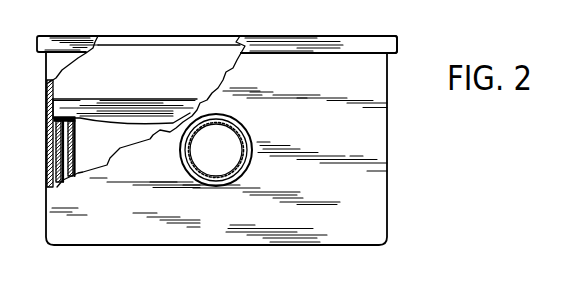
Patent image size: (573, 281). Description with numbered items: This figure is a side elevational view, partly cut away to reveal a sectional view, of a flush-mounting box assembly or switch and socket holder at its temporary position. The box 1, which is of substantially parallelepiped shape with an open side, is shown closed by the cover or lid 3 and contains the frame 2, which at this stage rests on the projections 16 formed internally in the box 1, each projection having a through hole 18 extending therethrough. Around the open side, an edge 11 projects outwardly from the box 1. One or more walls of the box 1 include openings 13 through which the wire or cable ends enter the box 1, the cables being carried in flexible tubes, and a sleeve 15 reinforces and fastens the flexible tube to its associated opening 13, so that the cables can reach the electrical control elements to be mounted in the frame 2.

The box 1 is at (67, 198).
The frame 2 is at (115, 112).
The cover or lid 3 is at (162, 22).
The edge 11 is at (385, 22).
The openings 13 is at (223, 161).
The sleeve 15 is at (242, 132).
The projections 16 is at (83, 147).
The through hole 18 is at (64, 144).